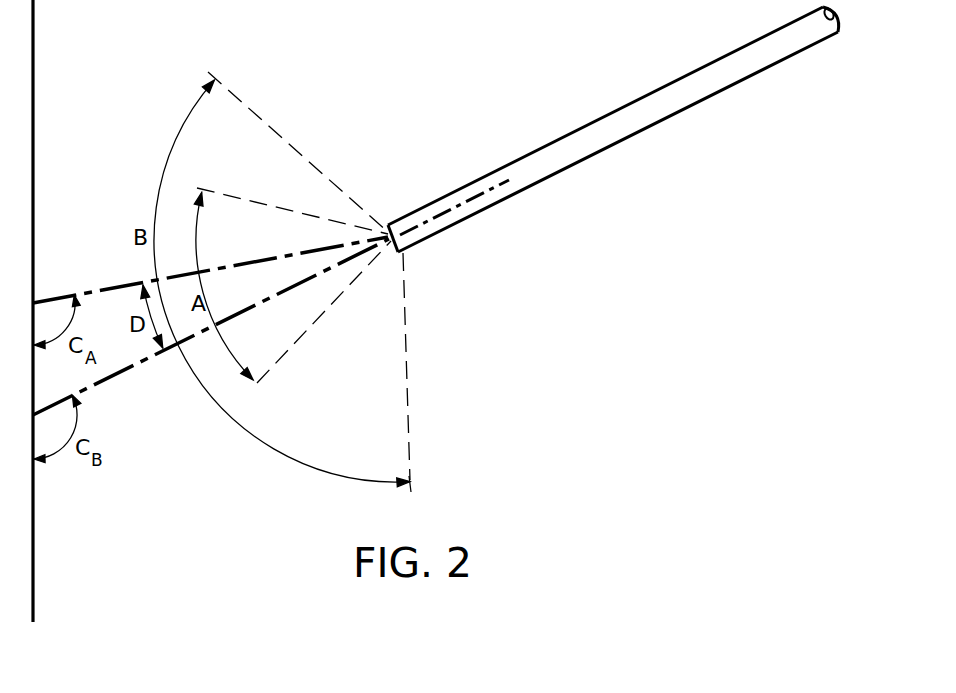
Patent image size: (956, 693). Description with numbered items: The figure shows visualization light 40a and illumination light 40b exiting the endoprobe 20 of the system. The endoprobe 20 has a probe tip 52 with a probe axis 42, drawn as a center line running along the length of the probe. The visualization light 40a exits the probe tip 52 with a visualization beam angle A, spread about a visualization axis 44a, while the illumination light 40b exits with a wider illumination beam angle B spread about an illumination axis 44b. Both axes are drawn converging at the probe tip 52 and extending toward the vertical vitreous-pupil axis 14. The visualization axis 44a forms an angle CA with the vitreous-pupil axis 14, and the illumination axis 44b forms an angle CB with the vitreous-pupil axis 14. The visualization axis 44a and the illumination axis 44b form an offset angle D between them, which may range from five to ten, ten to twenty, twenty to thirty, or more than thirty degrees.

The vitreous-pupil axis 14 is at (34, 169).
The endoprobe 20 is at (607, 117).
The probe tip 52 is at (703, 102).
The probe axis 42 is at (505, 188).
The visualization axis 44a is at (100, 290).
The illumination axis 44b is at (106, 380).
The visualization light 40a is at (285, 328).
The illumination light 40b is at (258, 166).